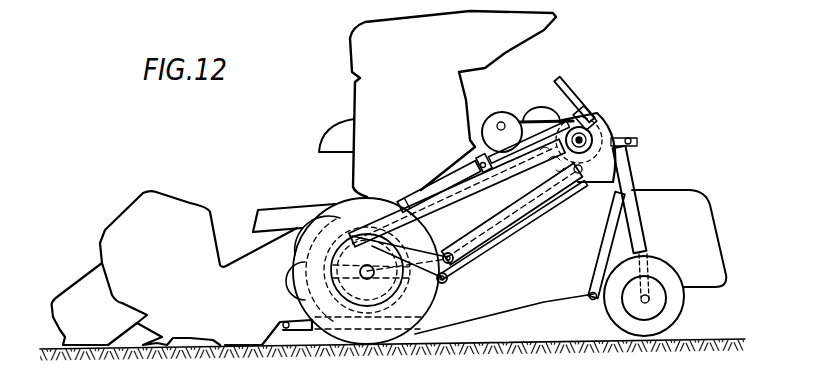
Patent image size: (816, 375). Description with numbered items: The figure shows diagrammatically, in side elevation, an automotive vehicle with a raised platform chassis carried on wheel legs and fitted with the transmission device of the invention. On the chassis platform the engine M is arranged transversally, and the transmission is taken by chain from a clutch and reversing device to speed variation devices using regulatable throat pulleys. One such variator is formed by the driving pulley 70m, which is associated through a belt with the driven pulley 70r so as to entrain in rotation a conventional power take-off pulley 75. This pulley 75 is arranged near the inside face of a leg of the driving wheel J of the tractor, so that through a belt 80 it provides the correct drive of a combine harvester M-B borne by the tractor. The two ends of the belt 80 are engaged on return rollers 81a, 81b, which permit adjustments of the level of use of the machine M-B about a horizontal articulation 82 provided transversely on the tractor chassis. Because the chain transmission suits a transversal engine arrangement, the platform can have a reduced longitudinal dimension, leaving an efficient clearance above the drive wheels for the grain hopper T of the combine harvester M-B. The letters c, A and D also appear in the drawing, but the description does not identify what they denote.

The grain hopper T is at (453, 104).
The driving pulley 70m is at (511, 97).
The driven pulley 70r is at (633, 103).
The engine M is at (540, 117).
The control lever c is at (598, 100).
The power take-off pulley 75 is at (604, 120).
The hydraulic cylinder A is at (483, 167).
The driving wheel J is at (457, 208).
The belt 80 is at (488, 250).
The return roller 81a is at (460, 262).
The return roller 81b is at (443, 284).
The head plate D is at (575, 193).
The combine harvester M-B is at (532, 236).
The horizontal articulation 82 is at (592, 300).